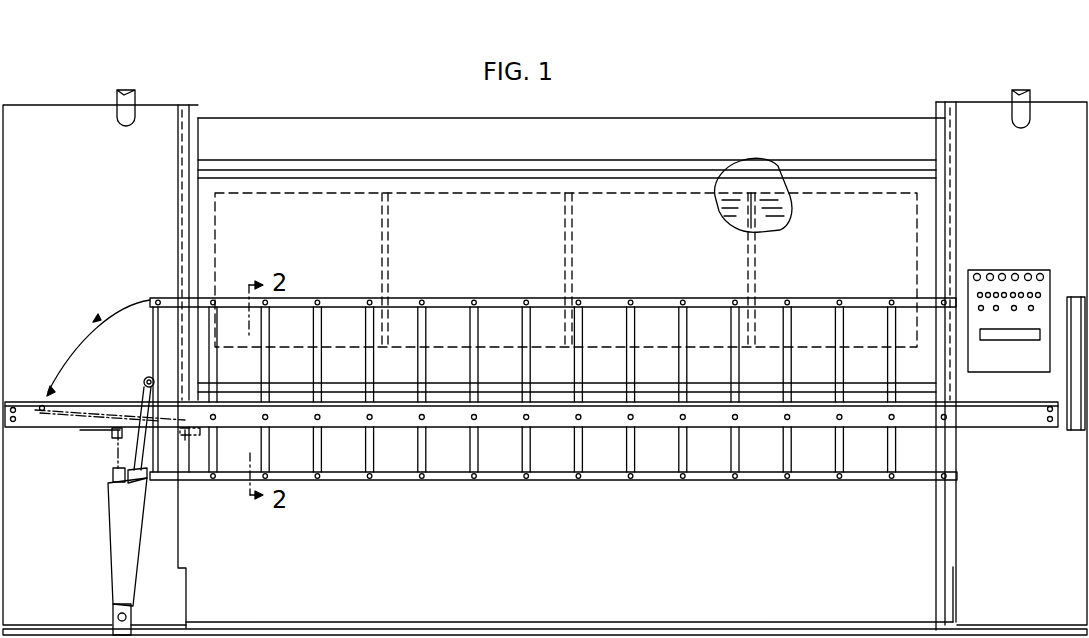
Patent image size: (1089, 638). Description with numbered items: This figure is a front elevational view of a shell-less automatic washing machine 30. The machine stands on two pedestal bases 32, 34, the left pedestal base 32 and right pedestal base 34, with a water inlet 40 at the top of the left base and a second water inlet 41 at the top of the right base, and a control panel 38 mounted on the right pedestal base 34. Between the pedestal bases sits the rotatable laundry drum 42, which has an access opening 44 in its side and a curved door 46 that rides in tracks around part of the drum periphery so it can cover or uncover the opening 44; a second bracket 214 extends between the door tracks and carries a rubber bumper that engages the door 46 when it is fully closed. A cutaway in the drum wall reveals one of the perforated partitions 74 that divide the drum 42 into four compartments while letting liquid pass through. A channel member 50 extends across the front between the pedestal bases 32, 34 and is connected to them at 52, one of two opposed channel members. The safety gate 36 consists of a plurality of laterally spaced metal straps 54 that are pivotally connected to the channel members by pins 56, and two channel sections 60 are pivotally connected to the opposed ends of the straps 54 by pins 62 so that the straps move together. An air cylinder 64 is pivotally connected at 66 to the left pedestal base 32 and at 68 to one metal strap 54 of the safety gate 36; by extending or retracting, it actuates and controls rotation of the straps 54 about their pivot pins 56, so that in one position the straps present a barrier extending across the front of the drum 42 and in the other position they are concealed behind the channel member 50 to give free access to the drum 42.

The shell-less automatic washing machine 30 is at (330, 92).
The pedestal base 32 is at (170, 541).
The pedestal base 34 is at (972, 523).
The safety gate 36 is at (637, 484).
The control panel 38 is at (1058, 272).
The water inlet 40 is at (133, 93).
The water inlet 41 is at (1024, 92).
The rotatable laundry drum 42 is at (692, 125).
The access opening 44 is at (792, 212).
The door 46 is at (607, 198).
The channel member 50 is at (27, 405).
The connection of channel member to pedestal base 52 is at (15, 428).
The metal strap 54 is at (527, 458).
The pin 56 is at (266, 420).
The channel section 60 is at (553, 386).
The pin 62 is at (527, 302).
The air cylinder 64 is at (127, 568).
The pivot connection of air cylinder to pedestal base 66 is at (115, 616).
The pivot connection of air cylinder to strap 68 is at (144, 380).
The perforated partition 74 is at (382, 228).
The second bracket 214 is at (415, 176).